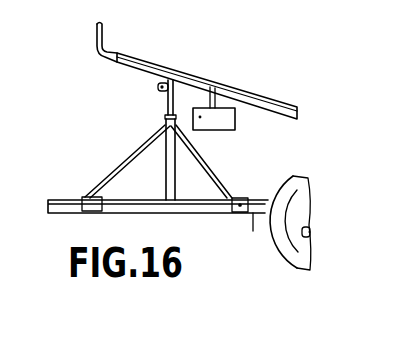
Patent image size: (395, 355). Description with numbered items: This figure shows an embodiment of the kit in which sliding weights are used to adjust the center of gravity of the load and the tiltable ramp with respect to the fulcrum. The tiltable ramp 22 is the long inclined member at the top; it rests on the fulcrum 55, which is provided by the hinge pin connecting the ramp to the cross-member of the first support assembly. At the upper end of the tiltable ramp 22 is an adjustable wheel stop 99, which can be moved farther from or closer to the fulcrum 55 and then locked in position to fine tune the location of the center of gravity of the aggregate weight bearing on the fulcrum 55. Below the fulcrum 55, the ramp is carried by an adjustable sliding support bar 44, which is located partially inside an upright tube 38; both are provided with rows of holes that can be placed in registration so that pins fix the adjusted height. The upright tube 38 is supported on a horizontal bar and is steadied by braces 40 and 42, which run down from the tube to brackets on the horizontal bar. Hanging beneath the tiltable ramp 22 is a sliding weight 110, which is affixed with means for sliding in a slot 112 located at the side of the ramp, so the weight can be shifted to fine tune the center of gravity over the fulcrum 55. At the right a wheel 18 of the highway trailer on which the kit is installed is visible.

The adjustable wheel stop 99 is at (100, 50).
The tiltable ramp 22 is at (290, 110).
The fulcrum 55 is at (170, 80).
The adjustable sliding support bar 44 is at (167, 100).
The brace 40 is at (134, 156).
The brace 42 is at (187, 152).
The upright tube 38 is at (167, 160).
The slot 112 is at (247, 97).
The sliding weight 110 is at (236, 122).
The wheel 18 is at (273, 242).